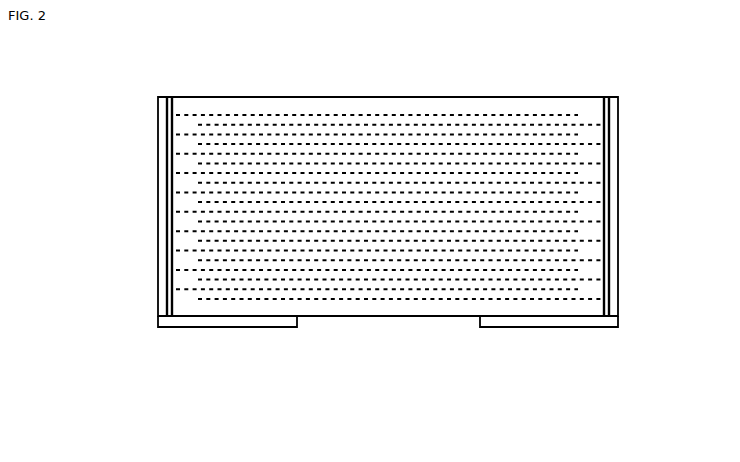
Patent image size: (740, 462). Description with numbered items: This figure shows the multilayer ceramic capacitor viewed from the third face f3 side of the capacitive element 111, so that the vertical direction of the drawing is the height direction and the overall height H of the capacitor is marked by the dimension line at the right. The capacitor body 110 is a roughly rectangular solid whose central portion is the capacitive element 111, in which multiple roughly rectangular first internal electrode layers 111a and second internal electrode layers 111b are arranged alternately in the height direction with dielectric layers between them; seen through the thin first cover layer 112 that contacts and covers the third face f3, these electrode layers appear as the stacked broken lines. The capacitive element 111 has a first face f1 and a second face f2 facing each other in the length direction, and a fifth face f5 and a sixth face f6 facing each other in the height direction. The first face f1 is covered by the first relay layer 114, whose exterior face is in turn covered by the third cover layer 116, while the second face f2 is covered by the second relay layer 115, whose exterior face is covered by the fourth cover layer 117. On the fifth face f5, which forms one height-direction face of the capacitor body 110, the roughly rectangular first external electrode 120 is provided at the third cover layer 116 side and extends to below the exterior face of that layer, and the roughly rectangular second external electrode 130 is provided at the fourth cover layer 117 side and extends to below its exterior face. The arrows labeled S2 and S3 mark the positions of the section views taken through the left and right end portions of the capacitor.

The capacitor body 110 is at (163, 96).
The capacitive element 111 is at (382, 97).
The first internal electrode layer 111a is at (513, 107).
The second internal electrode layer 111b is at (562, 107).
The first cover layer 112 is at (467, 105).
The first relay layer 114 is at (168, 160).
The second relay layer 115 is at (611, 152).
The third cover layer 116 is at (161, 190).
The fourth cover layer 117 is at (611, 190).
The first external electrode 120 is at (240, 327).
The second external electrode 130 is at (537, 327).
The first face f1 is at (163, 108).
The second face f2 is at (615, 104).
The third face f3 is at (343, 105).
The fifth face f5 is at (423, 317).
The sixth face f6 is at (420, 97).
The section line S2 is at (168, 97).
The section line S3 is at (604, 97).
The height H is at (620, 97).